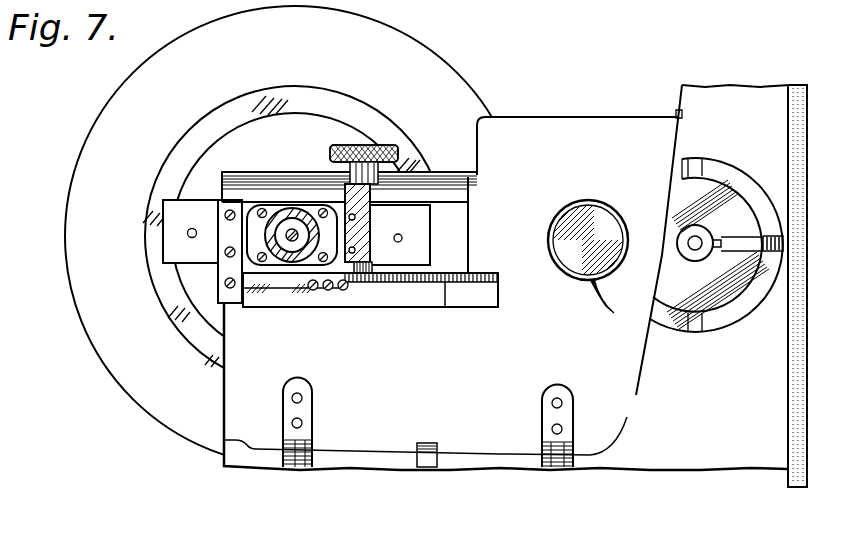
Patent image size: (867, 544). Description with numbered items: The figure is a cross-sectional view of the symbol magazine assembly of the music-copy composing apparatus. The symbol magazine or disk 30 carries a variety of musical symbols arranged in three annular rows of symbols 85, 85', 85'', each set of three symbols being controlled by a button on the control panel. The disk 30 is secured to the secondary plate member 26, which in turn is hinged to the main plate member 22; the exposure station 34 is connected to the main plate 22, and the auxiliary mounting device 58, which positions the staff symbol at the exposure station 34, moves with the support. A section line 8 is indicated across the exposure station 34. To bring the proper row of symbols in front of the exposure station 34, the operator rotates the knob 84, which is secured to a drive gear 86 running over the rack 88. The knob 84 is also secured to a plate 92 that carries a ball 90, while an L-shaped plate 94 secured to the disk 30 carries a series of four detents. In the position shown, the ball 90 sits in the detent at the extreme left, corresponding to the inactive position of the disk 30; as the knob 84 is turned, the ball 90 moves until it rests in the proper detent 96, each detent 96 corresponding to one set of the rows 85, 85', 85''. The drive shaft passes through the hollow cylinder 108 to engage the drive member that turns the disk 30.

The main plate member 22 is at (737, 438).
The secondary plate member 26 is at (590, 158).
The symbol magazine 30 is at (142, 393).
The exposure station 34 is at (600, 230).
The section line 8- 8 is at (648, 270).
The auxiliary mounting device 58 is at (735, 180).
The knob 84 is at (388, 147).
The symbols 85 is at (73, 249).
The symbols 85' is at (135, 294).
The symbols 85'' is at (110, 311).
The drive gear 86 is at (363, 273).
The rack 88 is at (443, 285).
The ball 90 is at (226, 283).
The plate 92 is at (235, 300).
The L-shaped plate 94 is at (278, 288).
The detent 96 is at (328, 291).
The hollow cylinder 108 is at (288, 208).